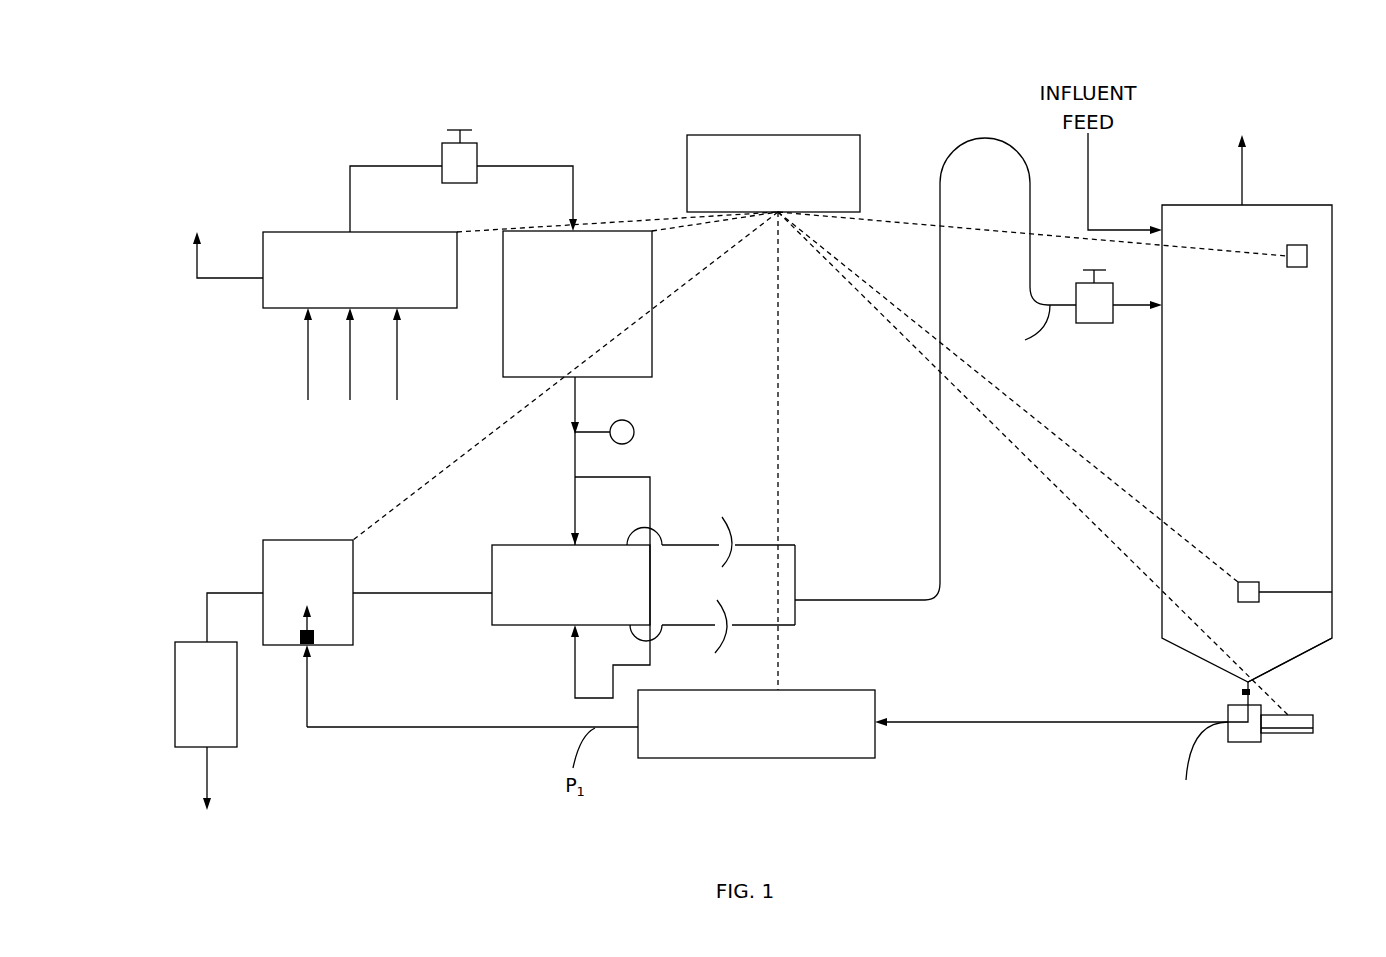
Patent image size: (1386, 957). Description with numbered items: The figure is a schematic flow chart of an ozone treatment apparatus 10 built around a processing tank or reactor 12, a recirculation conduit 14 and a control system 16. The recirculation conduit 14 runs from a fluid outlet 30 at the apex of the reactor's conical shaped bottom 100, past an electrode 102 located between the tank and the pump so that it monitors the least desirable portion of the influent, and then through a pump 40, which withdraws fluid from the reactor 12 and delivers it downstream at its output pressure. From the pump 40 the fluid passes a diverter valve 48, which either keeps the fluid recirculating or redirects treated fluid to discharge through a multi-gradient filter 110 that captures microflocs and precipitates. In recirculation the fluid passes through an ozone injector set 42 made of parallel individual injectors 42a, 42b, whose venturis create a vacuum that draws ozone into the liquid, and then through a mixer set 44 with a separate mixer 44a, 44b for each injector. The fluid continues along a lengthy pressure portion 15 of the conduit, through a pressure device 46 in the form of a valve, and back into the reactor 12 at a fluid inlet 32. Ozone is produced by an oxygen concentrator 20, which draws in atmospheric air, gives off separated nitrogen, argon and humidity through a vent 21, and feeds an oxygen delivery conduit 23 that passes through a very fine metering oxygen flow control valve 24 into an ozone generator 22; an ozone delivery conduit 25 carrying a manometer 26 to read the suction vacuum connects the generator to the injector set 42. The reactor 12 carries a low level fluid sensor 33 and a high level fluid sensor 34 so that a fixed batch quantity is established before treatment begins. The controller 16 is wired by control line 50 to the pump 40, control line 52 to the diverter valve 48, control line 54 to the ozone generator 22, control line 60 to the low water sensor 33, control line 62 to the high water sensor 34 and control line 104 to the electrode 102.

The treatment apparatus 10 is at (705, 82).
The processing tank (reactor) 12 is at (1332, 428).
The recirculation conduit 14 is at (480, 728).
The pressure portion 15 is at (940, 518).
The control system 16 is at (860, 135).
The oxygen concentrator 20 is at (288, 232).
The vent 21 is at (195, 262).
The ozone generator 22 is at (652, 343).
The oxygen delivery conduit 23 is at (352, 166).
The oxygen flow control valve 24 is at (478, 150).
The ozone delivery conduit 25 is at (575, 393).
The manometer 26 is at (636, 428).
The fluid outlet 30 is at (1240, 692).
The fluid inlet 32 is at (1150, 312).
The low level fluid sensor 33 is at (1332, 592).
The high level fluid sensor 34 is at (1307, 262).
The pump 40 is at (715, 758).
The ozone injector set 42 is at (545, 508).
The individual injector 42a is at (542, 540).
The individual injector 42b is at (542, 630).
The mixer set 44 is at (790, 526).
The mixer 44a is at (722, 517).
The mixer 44b is at (722, 650).
The pressure device 46 is at (1092, 323).
The diverter valve 48 is at (355, 565).
The control line 50 is at (780, 320).
The control line 52 is at (682, 286).
The control line 54 is at (677, 227).
The control line 60 is at (1080, 460).
The control line 62 is at (1048, 232).
The conical shaped bottom 100 is at (1290, 662).
The electrode 102 is at (1290, 735).
The control line 104 is at (1108, 540).
The multi-gradient filter 110 is at (237, 715).